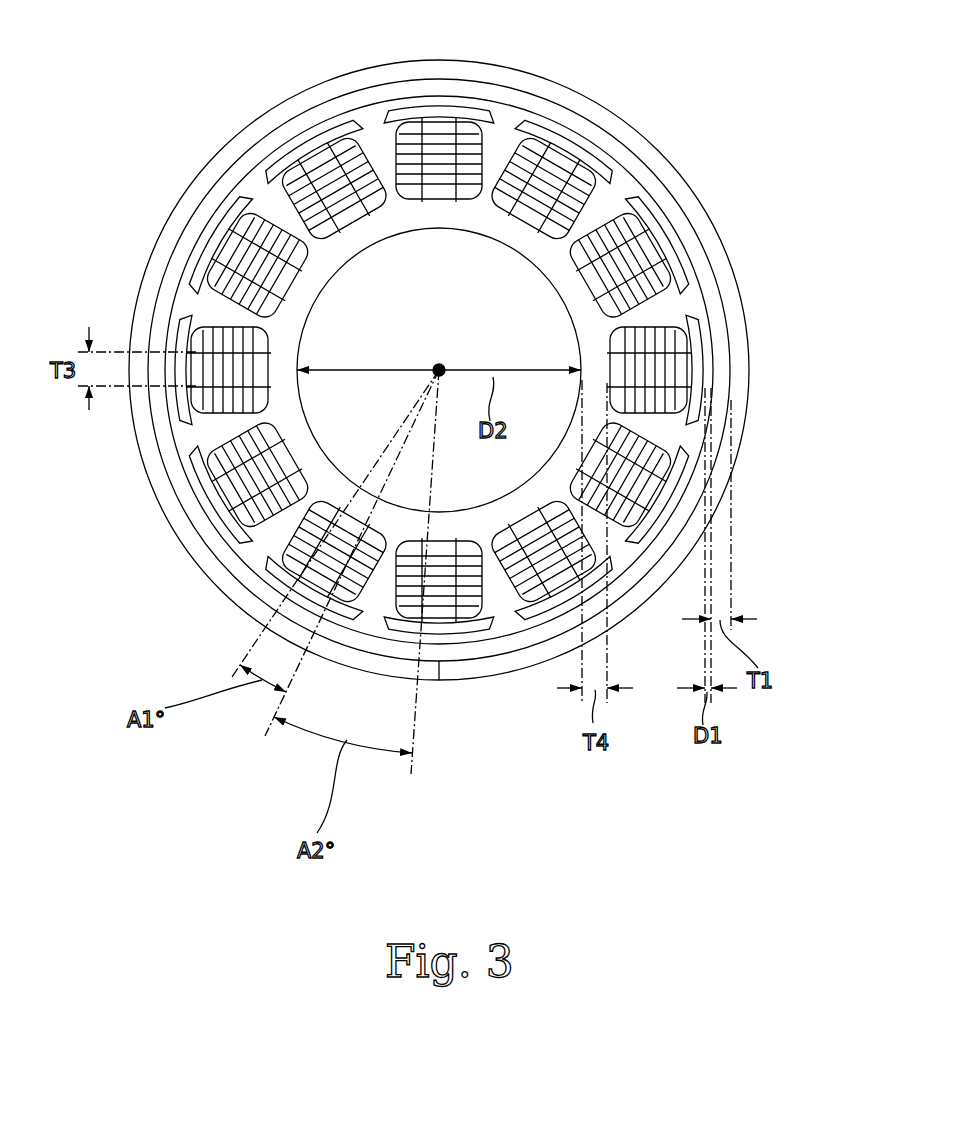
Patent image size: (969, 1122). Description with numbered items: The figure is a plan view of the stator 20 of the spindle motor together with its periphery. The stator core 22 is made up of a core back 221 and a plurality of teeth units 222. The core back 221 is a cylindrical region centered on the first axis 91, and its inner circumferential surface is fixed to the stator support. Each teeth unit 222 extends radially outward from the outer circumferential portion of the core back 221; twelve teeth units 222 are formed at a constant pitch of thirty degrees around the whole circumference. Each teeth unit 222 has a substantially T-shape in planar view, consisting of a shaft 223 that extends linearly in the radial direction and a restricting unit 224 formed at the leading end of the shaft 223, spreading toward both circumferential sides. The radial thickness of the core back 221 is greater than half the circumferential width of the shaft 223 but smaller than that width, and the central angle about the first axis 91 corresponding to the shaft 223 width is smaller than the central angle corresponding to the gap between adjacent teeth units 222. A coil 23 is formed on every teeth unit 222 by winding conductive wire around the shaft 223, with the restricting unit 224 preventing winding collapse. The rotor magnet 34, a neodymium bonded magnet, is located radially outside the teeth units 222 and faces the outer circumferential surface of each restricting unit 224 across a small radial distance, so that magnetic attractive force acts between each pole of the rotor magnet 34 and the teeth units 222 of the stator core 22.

The stator 20 is at (390, 325).
The stator core 22 is at (390, 325).
The coil 23 is at (393, 138).
The rotor magnet 34 is at (257, 148).
The first axis 91 is at (437, 362).
The core back 221 is at (325, 480).
The teeth unit 222 is at (577, 135).
The shaft 223 is at (533, 110).
The restricting unit 224 is at (408, 110).